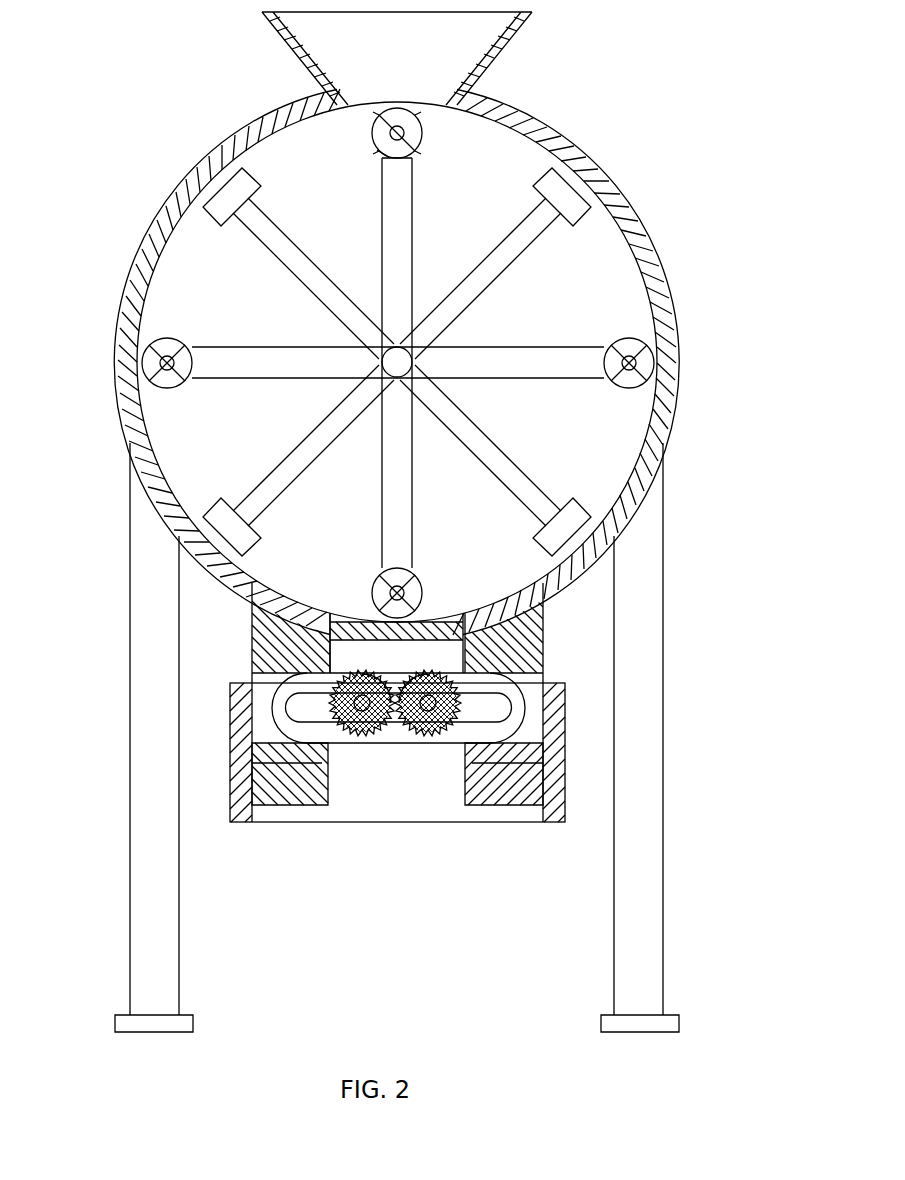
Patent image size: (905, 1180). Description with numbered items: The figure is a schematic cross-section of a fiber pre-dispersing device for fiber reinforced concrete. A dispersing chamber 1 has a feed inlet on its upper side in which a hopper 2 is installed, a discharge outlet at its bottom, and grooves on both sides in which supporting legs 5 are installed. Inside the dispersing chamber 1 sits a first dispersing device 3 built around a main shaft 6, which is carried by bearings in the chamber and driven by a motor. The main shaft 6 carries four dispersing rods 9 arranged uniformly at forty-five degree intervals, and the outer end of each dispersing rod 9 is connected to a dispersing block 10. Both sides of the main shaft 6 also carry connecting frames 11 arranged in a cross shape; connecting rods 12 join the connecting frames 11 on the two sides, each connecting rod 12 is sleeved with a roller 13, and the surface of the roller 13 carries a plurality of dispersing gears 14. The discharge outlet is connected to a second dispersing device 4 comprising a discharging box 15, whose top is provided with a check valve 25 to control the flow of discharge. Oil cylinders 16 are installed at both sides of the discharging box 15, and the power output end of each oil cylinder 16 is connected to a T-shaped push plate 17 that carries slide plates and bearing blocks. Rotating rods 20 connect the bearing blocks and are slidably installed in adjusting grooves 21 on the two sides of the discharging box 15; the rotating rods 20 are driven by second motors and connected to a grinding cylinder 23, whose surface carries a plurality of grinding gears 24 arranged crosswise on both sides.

The dispersing chamber 1 is at (127, 320).
The hopper 2 is at (293, 58).
The first dispersing device 3 is at (160, 363).
The second dispersing device 4 is at (237, 683).
The supporting legs 5 is at (145, 873).
The main shaft 6 is at (430, 352).
The dispersing rods 9 is at (507, 262).
The dispersing block 10 is at (567, 200).
The connecting frames 11 is at (405, 217).
The connecting rods 12 is at (390, 130).
The roller 13 is at (377, 150).
The dispersing gears 14 is at (410, 157).
The discharging box 15 is at (548, 612).
The oil cylinders 16 is at (512, 790).
The T-shaped push plate 17 is at (553, 750).
The rotating rods 20 is at (430, 735).
The adjusting grooves 21 is at (503, 706).
The grinding cylinder 23 is at (352, 730).
The grinding gears 24 is at (387, 735).
The check valve 25 is at (262, 626).